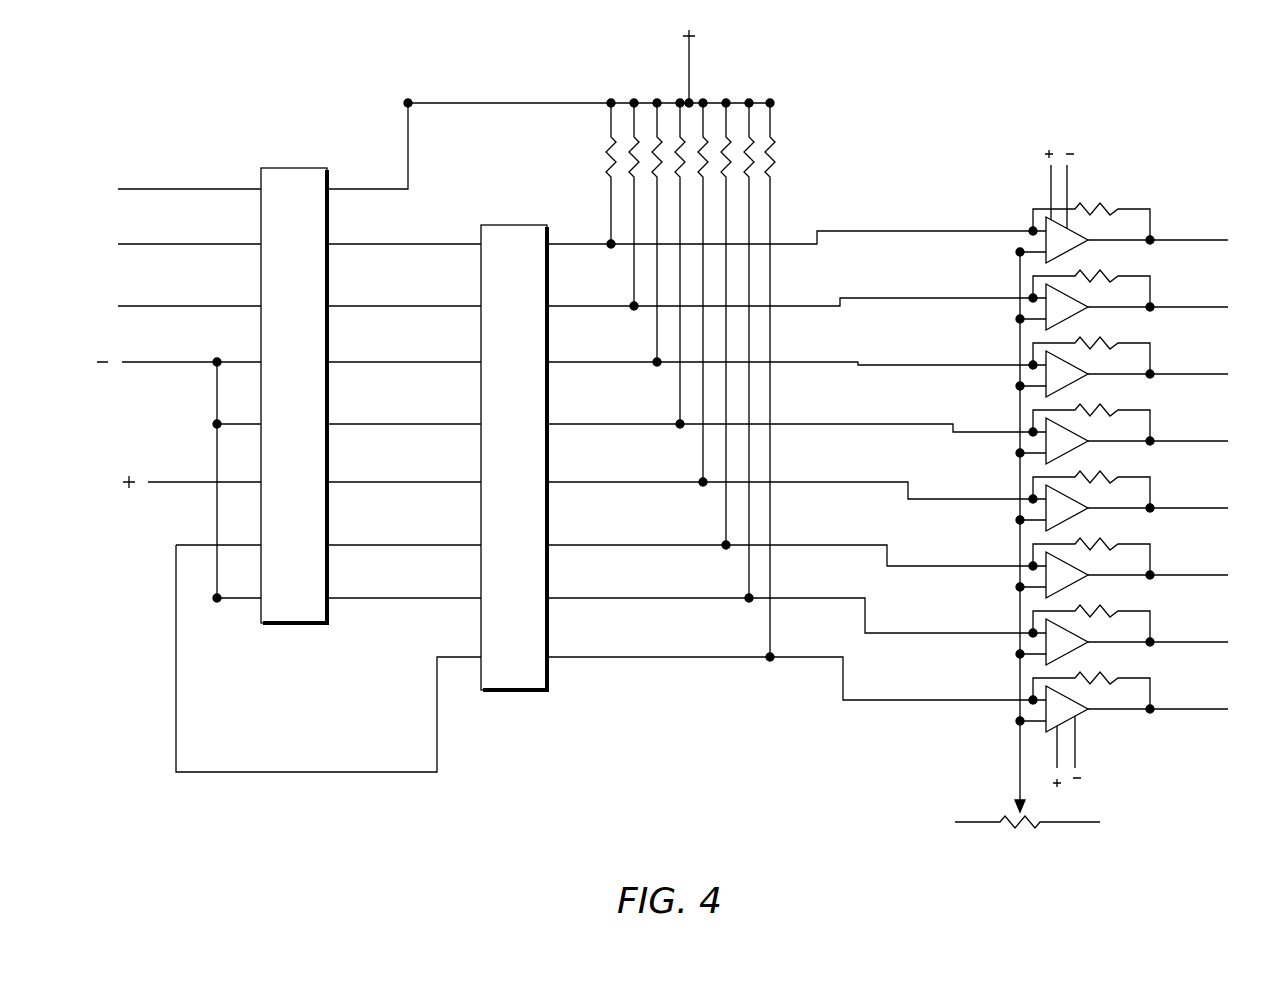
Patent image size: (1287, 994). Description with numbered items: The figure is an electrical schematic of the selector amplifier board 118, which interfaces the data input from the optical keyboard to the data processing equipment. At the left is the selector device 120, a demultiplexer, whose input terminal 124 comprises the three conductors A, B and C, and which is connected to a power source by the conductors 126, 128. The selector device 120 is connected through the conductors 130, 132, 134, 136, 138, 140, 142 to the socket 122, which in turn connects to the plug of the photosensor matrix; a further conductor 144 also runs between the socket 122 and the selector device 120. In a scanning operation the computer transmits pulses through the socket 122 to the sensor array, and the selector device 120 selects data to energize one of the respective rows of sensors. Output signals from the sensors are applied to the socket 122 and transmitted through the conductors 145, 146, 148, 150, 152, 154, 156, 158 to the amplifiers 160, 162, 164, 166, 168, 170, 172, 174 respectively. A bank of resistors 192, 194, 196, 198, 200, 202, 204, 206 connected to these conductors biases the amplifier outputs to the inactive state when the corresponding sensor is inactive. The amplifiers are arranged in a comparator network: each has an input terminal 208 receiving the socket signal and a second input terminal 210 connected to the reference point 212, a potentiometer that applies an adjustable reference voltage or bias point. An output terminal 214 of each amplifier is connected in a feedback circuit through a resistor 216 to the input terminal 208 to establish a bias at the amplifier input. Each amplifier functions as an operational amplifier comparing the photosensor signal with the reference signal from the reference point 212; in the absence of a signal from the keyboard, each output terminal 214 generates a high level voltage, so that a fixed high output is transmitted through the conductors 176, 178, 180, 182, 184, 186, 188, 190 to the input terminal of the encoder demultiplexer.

The selector amplifier board 118 is at (346, 88).
The selector device 120 is at (298, 168).
The socket 122 is at (522, 225).
The input terminal 124 is at (93, 226).
The conductor 126 is at (153, 365).
The conductor 128 is at (160, 480).
The conductor 130 is at (438, 248).
The conductor 132 is at (438, 310).
The conductor 134 is at (438, 366).
The conductor 136 is at (438, 428).
The conductor 138 is at (438, 486).
The conductor 140 is at (438, 549).
The conductor 142 is at (438, 602).
The conductor 144 is at (440, 757).
The conductor 145 is at (567, 246).
The conductor 146 is at (567, 308).
The conductor 148 is at (567, 364).
The conductor 150 is at (567, 426).
The conductor 152 is at (567, 484).
The conductor 154 is at (567, 547).
The conductor 156 is at (567, 600).
The conductor 158 is at (567, 659).
The amplifier 160 is at (1082, 245).
The amplifier 162 is at (1082, 312).
The amplifier 164 is at (1082, 379).
The amplifier 166 is at (1082, 446).
The amplifier 168 is at (1082, 513).
The amplifier 170 is at (1082, 580).
The amplifier 172 is at (1082, 647).
The amplifier 174 is at (1082, 714).
The conductor 176 is at (1213, 241).
The conductor 178 is at (1213, 308).
The conductor 180 is at (1213, 375).
The conductor 182 is at (1213, 442).
The conductor 184 is at (1213, 509).
The conductor 186 is at (1213, 576).
The conductor 188 is at (1213, 643).
The conductor 190 is at (1213, 710).
The resistor 192 is at (607, 137).
The resistor 194 is at (628, 138).
The resistor 196 is at (651, 138).
The resistor 198 is at (675, 138).
The resistor 200 is at (701, 140).
The resistor 202 is at (725, 140).
The resistor 204 is at (748, 142).
The resistor 206 is at (770, 142).
The input terminal 208 is at (1032, 230).
The second input terminal 210 is at (1019, 252).
The reference point 212 is at (1000, 822).
The output terminal 214 is at (1152, 243).
The resistor 216 is at (1095, 208).